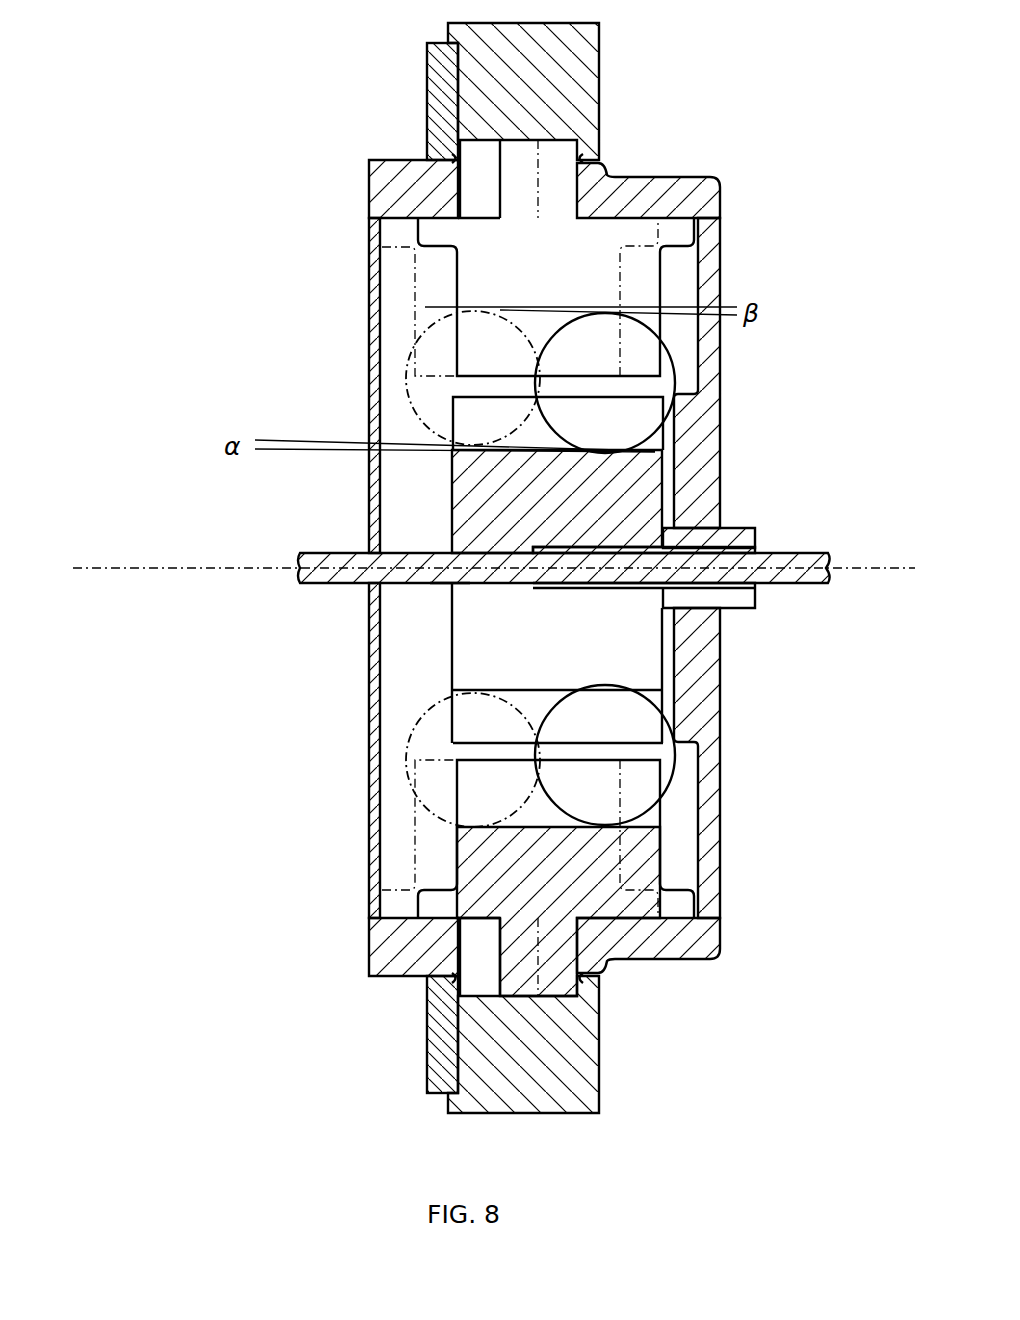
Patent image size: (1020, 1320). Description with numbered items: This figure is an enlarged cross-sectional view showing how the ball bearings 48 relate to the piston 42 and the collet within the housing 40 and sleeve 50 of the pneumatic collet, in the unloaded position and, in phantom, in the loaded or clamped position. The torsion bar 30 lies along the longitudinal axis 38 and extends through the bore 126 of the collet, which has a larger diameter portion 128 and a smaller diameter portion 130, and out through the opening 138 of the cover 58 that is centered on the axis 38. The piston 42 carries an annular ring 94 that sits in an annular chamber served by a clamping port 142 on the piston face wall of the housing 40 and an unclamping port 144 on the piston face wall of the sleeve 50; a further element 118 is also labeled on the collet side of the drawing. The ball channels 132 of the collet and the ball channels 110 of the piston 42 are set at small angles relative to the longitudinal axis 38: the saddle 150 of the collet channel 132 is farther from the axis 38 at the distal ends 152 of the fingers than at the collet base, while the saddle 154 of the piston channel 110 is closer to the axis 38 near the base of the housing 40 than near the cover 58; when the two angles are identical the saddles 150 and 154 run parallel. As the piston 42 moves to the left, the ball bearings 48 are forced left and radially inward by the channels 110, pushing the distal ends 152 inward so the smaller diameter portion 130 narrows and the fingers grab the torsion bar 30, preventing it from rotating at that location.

The torsion bar 30 is at (298, 553).
The longitudinal axis 38 is at (100, 567).
The housing 40 is at (553, 1115).
The piston 42 is at (410, 273).
The ball bearings 48 is at (678, 390).
The sleeve 50 is at (421, 976).
The cover 58 is at (372, 920).
The annular ring 94 is at (460, 993).
The ball channels of the piston 110 is at (523, 812).
The flange 118 is at (750, 527).
The bore 126 is at (753, 588).
The larger diameter portion 128 is at (755, 550).
The smaller diameter portion 130 is at (467, 583).
The ball channels of the collet 132 is at (545, 432).
The opening 138 is at (368, 585).
The clamping port 142 is at (600, 163).
The unclamping port 144 is at (455, 158).
The saddle 150 is at (537, 450).
The distal ends 152 is at (452, 518).
The saddle 154 is at (650, 817).